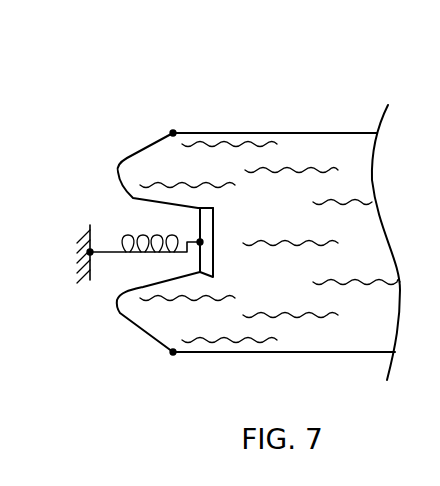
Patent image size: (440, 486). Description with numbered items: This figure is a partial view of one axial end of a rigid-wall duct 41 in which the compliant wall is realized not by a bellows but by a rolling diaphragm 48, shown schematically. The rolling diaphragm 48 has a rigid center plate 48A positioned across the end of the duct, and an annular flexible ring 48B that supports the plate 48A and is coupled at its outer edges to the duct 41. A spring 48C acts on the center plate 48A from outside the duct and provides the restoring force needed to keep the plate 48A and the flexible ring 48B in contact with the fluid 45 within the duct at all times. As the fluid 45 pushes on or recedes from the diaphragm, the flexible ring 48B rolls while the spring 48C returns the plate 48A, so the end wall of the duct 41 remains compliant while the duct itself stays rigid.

The rigid-wall duct 41 is at (270, 227).
The fluid 45 is at (317, 315).
The rolling diaphragm 48 is at (116, 193).
The rigid center plate 48A is at (198, 265).
The annular flexible ring 48B is at (117, 175).
The spring 48C is at (127, 233).